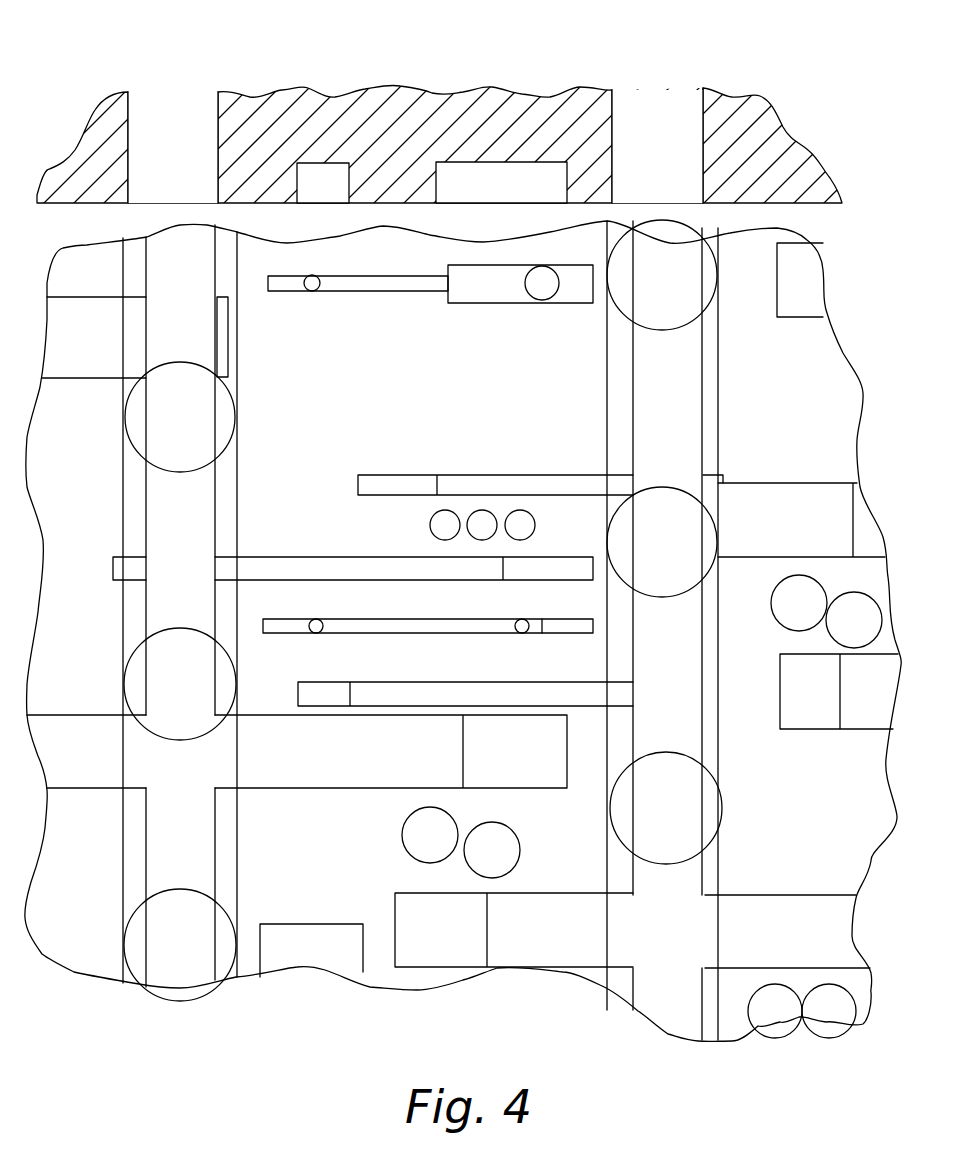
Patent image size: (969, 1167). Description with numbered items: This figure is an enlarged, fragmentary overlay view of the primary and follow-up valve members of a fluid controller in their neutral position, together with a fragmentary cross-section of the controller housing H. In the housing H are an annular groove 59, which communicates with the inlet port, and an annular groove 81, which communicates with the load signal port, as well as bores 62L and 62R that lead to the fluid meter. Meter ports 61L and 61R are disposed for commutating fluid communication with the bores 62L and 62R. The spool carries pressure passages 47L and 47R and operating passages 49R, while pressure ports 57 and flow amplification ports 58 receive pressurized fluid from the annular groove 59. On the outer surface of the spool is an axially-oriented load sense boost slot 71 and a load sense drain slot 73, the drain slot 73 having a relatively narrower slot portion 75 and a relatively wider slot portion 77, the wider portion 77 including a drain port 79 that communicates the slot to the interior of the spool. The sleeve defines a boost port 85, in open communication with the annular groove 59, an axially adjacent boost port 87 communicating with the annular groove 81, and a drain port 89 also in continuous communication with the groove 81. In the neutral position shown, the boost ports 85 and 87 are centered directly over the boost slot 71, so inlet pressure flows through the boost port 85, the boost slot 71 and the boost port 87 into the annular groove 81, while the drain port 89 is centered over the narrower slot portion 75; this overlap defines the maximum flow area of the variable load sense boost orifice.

The housing H is at (790, 140).
The bore 62L is at (173, 115).
The bore 62R is at (662, 105).
The annular groove 81 is at (328, 173).
The annular groove 59 is at (498, 177).
The meter port 61L is at (183, 468).
The meter port 61R is at (668, 762).
The narrower slot portion 75 is at (378, 292).
The drain port 89 is at (312, 292).
The wider slot portion 77 is at (473, 303).
The drain port 79 is at (540, 290).
The load sense drain slot 73 is at (422, 308).
The flow amplification port 58 is at (413, 523).
The load sense boost slot 71 is at (427, 633).
The boost port 87 is at (316, 633).
The boost port 85 is at (522, 633).
The pressure passage 47L is at (326, 778).
The pressure passage 47R is at (547, 945).
The operating passage 49R is at (768, 480).
The pressure port 57 is at (393, 853).